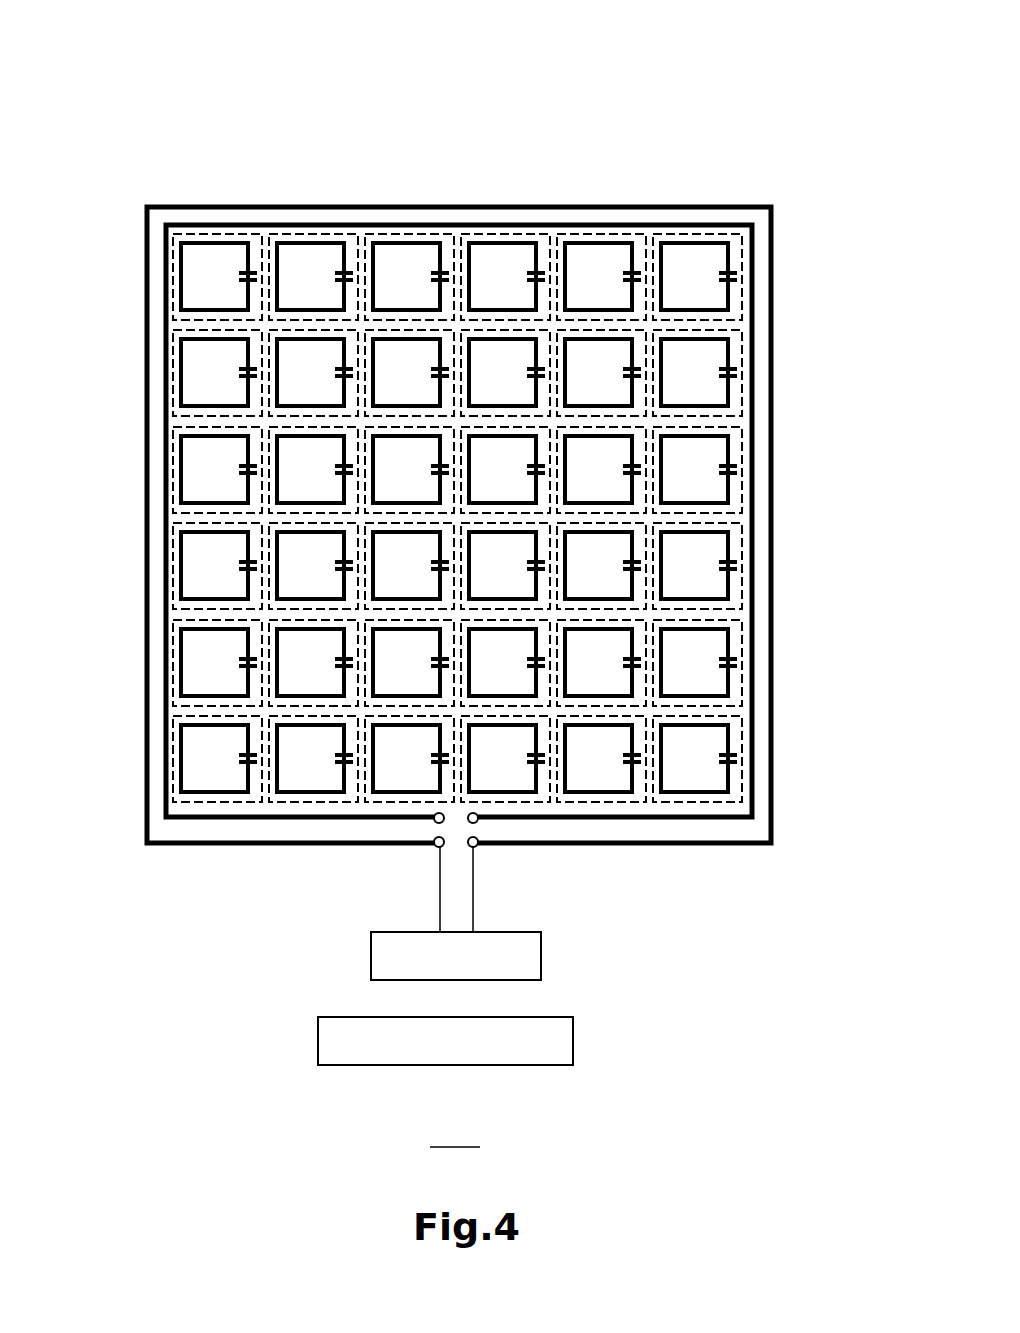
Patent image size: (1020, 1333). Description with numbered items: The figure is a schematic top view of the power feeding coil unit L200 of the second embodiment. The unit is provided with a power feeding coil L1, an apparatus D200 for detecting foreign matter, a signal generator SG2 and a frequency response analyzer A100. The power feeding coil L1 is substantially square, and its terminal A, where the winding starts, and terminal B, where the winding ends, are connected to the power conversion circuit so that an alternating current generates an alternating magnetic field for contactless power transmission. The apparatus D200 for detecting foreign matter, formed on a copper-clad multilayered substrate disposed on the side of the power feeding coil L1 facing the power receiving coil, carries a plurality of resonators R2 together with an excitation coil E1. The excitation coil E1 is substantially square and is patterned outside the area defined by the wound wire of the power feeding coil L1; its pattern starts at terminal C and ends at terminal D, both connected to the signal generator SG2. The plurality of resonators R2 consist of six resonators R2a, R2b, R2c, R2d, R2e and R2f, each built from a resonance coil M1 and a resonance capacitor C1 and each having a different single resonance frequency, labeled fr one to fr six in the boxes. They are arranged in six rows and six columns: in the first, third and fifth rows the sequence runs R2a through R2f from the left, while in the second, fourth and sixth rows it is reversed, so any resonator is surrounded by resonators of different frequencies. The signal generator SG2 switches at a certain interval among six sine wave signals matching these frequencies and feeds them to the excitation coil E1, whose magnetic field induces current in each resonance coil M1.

The apparatus for detecting foreign matter D200 is at (888, 65).
The plurality of resonators R2 is at (780, 127).
The resonator R2a is at (218, 237).
The resonator R2b is at (313, 236).
The resonator R2c is at (409, 236).
The resonator R2d is at (506, 236).
The resonator R2e is at (602, 236).
The resonator R2f is at (698, 236).
The resonance coil M1 is at (197, 240).
The resonance capacitor C1 is at (242, 272).
The excitation coil E1 is at (777, 262).
The power feeding coil L1 is at (755, 767).
The terminal A is at (434, 823).
The terminal B is at (478, 823).
The terminal C is at (437, 848).
The terminal D is at (475, 848).
The signal generator SG2 is at (542, 960).
The frequency response analyzer A100 is at (574, 1043).
The power feeding coil unit L200 is at (455, 1136).